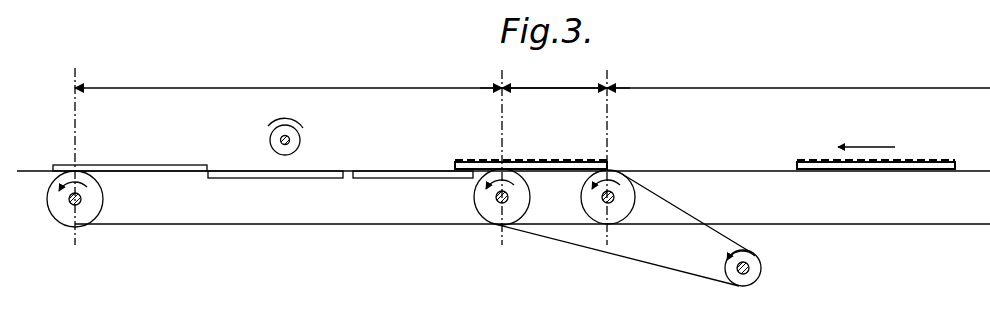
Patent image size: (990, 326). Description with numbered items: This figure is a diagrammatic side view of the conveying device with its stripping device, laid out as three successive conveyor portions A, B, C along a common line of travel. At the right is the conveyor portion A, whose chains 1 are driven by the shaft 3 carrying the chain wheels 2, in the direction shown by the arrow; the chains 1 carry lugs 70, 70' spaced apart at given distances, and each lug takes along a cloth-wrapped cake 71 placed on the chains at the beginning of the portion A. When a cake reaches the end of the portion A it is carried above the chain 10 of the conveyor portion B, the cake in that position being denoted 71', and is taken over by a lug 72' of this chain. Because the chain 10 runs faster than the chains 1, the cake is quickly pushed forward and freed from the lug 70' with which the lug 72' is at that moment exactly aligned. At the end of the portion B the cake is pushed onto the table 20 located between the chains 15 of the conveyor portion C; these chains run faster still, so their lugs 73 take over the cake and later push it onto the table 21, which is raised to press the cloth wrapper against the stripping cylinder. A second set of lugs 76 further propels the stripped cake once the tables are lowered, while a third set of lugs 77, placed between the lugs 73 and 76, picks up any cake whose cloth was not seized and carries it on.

The chains 1 is at (958, 225).
The chain wheels 2 is at (636, 212).
The shaft 3 is at (605, 205).
The chain 10 is at (515, 227).
The chains 15 is at (315, 225).
The table 20 is at (385, 172).
The table 21 is at (315, 172).
The lug 70 is at (971, 150).
The lug 70' is at (652, 154).
The cloth-wrapped cake 71 is at (876, 148).
The cake 71' is at (531, 148).
The lug 72' is at (627, 162).
The lugs 73 is at (418, 226).
The second set of lugs 76 is at (225, 158).
The third set of lugs 77 is at (248, 226).
The conveyor portion A is at (848, 74).
The conveyor portion B is at (554, 76).
The conveyor portion C is at (302, 78).